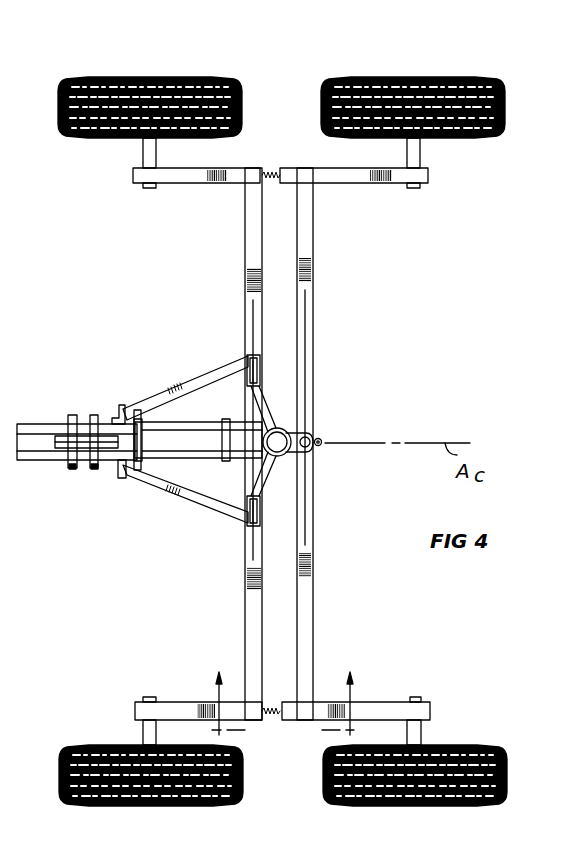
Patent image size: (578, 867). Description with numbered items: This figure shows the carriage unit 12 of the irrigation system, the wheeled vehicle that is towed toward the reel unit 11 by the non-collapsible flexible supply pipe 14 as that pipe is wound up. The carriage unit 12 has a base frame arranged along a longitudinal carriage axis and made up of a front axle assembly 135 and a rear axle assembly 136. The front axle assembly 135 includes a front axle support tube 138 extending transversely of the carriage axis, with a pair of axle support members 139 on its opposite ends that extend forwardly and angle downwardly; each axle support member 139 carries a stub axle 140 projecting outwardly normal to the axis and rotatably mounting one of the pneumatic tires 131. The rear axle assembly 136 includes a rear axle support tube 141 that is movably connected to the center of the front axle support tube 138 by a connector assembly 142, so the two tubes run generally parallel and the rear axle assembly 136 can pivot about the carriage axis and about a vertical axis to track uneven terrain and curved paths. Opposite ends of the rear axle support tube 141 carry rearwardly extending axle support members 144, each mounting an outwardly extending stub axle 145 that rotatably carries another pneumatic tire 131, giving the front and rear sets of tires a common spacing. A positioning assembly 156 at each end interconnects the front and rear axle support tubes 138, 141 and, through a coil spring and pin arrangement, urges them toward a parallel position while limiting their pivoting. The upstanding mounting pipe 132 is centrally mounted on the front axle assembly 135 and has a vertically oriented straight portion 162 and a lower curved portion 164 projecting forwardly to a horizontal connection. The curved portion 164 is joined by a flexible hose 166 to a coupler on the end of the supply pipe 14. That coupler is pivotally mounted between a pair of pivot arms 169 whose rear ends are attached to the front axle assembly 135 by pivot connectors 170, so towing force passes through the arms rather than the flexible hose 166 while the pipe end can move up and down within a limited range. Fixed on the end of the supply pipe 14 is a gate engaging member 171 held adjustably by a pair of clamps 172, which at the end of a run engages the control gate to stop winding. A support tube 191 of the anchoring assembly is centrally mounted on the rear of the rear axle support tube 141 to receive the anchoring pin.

The reel unit 11 is at (284, 694).
The carriage unit 12 is at (372, 334).
The supply pipe 14 is at (28, 462).
The pneumatic tires 131 is at (125, 77).
The mounting pipe 132 is at (287, 426).
The front axle assembly 135 is at (244, 578).
The rear axle assembly 136 is at (313, 542).
The front axle support tube 138 is at (246, 600).
The axle support members 139 is at (160, 184).
The stub axle 140 is at (143, 152).
The rear axle support tube 141 is at (314, 583).
The connector assembly 142 is at (295, 454).
The axle support members 144 is at (346, 183).
The stub axle 145 is at (420, 157).
The positioning assembly 156 is at (290, 148).
The straight portion 162 is at (296, 437).
The curved portion 164 is at (219, 448).
The flexible hose 166 is at (183, 428).
The pivot arms 169 is at (153, 476).
The pivot connectors 170 is at (247, 360).
The gate engaging member 171 is at (62, 436).
The clamps 172 is at (96, 470).
The support tube 191 is at (322, 439).